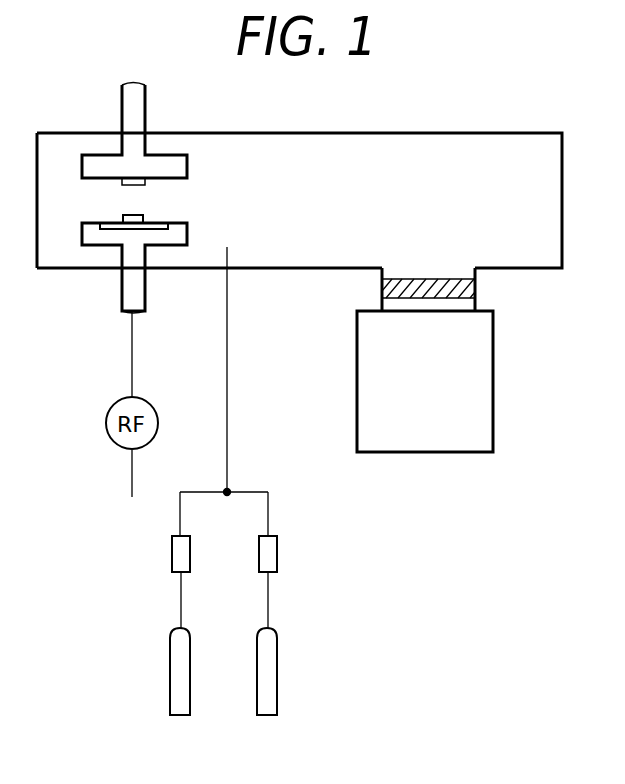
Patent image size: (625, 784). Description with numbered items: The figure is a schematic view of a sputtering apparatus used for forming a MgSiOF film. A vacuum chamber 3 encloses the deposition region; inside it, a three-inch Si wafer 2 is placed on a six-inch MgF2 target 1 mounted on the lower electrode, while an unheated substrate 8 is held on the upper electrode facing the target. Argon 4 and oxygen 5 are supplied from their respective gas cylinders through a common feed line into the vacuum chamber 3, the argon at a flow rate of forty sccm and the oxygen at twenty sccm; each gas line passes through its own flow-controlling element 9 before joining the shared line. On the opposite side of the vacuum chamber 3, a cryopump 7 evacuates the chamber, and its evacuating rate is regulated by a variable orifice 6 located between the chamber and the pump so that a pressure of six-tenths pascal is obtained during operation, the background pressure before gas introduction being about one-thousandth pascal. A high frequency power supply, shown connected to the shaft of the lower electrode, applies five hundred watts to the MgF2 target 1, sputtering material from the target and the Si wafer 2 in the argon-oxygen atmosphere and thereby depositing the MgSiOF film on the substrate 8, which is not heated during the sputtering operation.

The MgF2 target 1 is at (163, 226).
The Si wafer 2 is at (143, 218).
The vacuum chamber 3 is at (245, 133).
The argon 4 is at (170, 685).
The oxygen 5 is at (277, 693).
The variable orifice 6 is at (475, 288).
The cryopump 7 is at (493, 430).
The substrate 8 is at (132, 185).
The valves 9 is at (172, 565).